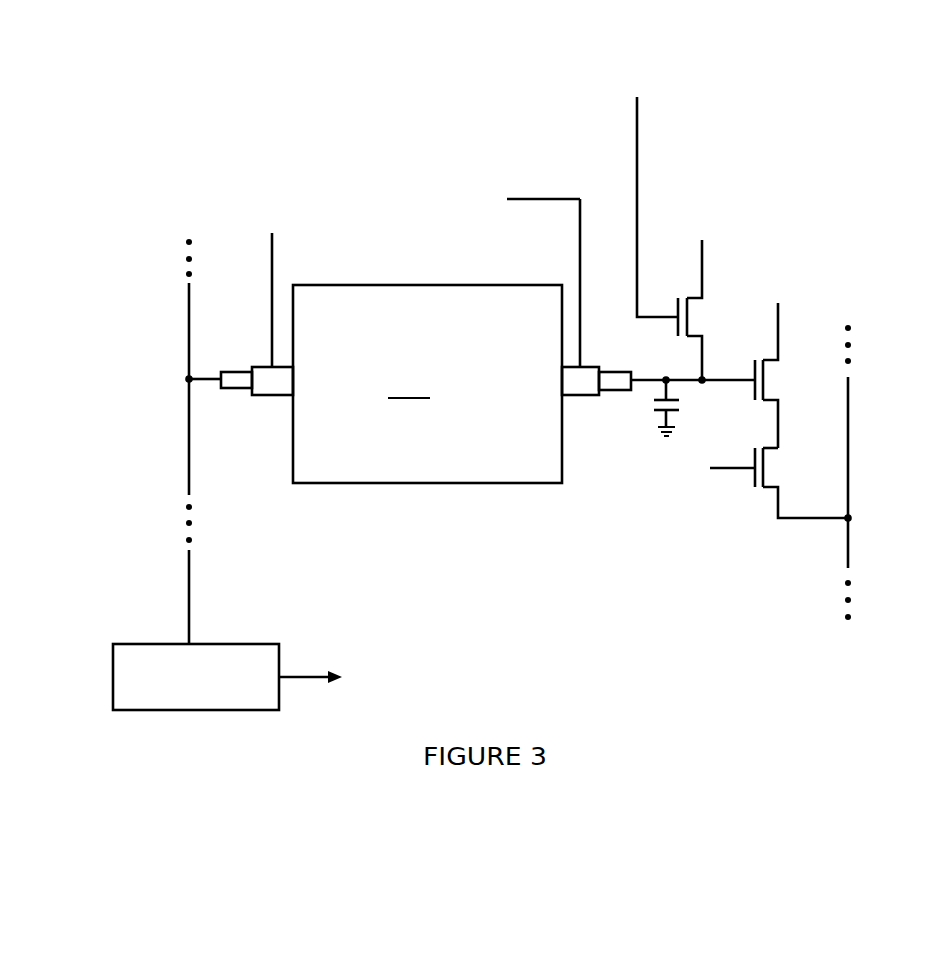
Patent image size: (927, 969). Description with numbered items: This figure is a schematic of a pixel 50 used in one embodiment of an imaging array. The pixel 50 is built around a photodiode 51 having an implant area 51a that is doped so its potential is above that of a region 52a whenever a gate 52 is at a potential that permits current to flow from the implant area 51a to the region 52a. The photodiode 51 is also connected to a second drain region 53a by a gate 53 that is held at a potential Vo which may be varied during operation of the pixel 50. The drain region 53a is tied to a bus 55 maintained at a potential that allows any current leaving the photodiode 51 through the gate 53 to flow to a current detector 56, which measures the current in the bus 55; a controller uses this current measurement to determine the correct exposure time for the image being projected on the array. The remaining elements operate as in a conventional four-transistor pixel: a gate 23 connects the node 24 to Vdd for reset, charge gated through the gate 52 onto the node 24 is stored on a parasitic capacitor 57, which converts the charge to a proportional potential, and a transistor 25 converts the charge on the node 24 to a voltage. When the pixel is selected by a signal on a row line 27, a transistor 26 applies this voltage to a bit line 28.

The pixel 50 is at (262, 146).
The photodiode 51 is at (382, 483).
The implant area 51a is at (408, 387).
The gate 52 is at (582, 389).
The region 52a is at (612, 378).
The gate 53 is at (268, 389).
The second drain region 53a is at (236, 372).
The bus 55 is at (189, 440).
The current detector 56 is at (255, 644).
The parasitic capacitor 57 is at (657, 420).
The gate 23 is at (678, 303).
The node 24 is at (704, 383).
The transistor 25 is at (770, 397).
The transistor 26 is at (770, 484).
The row line 27 is at (719, 468).
The bit line 28 is at (848, 415).